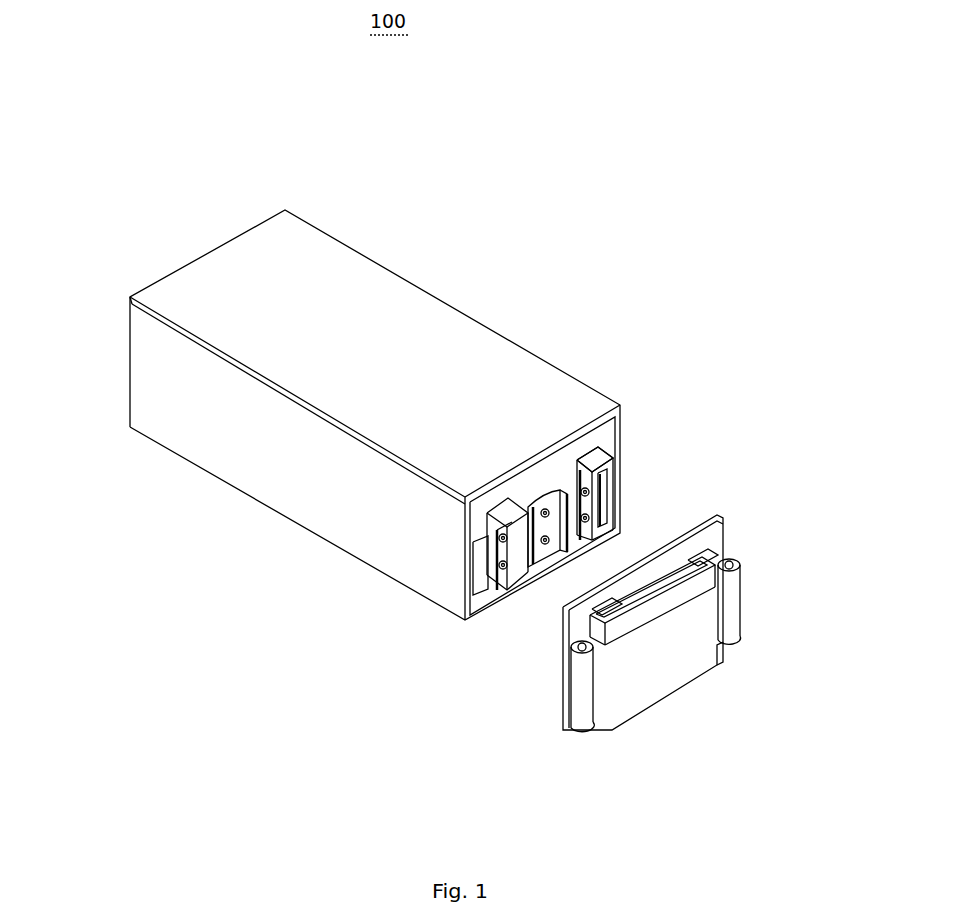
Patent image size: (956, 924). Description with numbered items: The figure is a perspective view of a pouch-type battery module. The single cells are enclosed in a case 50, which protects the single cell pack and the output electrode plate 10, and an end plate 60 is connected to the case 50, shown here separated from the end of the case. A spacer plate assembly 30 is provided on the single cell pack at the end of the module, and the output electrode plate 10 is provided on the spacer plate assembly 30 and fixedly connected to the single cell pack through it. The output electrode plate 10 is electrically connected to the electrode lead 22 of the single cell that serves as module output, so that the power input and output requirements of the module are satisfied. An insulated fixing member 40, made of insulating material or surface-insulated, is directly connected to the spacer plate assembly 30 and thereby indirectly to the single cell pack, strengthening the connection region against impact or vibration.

The case 50 is at (302, 512).
The spacer plate assembly 30 is at (607, 431).
The electrode lead 22 is at (497, 592).
The output electrode plate 10 is at (600, 522).
The insulated fixing member 40 is at (617, 490).
The end plate 60 is at (585, 698).